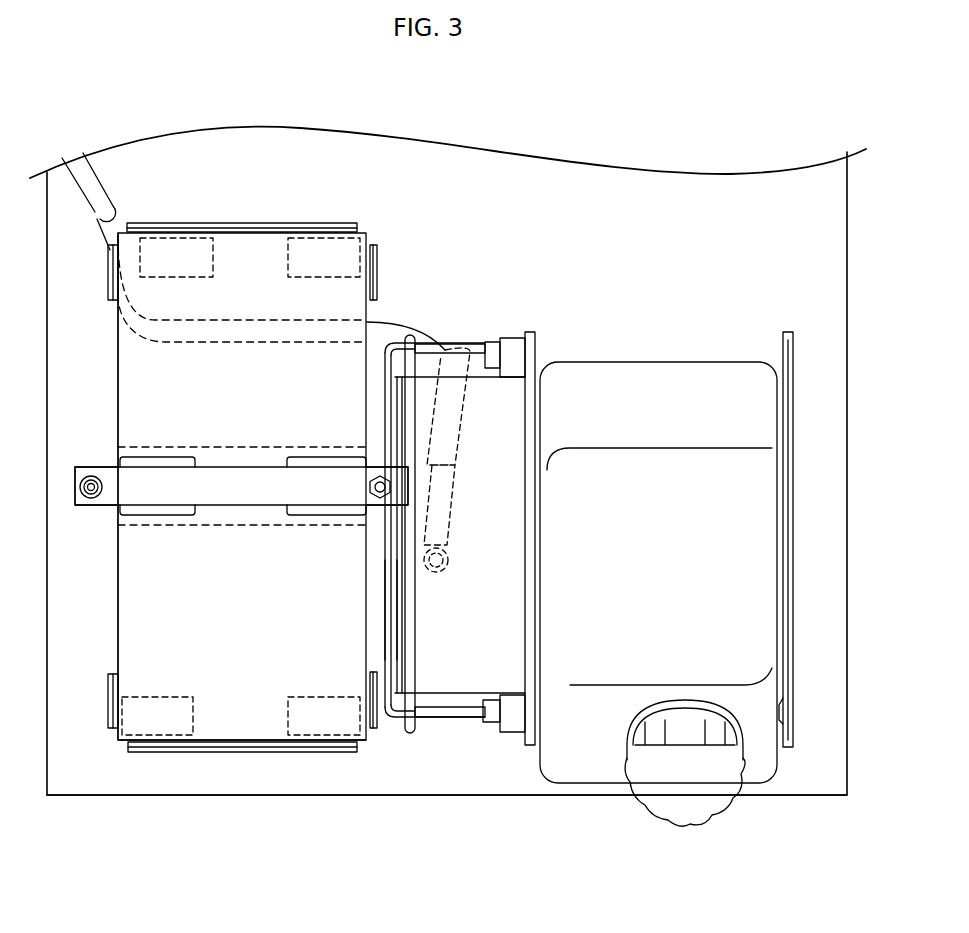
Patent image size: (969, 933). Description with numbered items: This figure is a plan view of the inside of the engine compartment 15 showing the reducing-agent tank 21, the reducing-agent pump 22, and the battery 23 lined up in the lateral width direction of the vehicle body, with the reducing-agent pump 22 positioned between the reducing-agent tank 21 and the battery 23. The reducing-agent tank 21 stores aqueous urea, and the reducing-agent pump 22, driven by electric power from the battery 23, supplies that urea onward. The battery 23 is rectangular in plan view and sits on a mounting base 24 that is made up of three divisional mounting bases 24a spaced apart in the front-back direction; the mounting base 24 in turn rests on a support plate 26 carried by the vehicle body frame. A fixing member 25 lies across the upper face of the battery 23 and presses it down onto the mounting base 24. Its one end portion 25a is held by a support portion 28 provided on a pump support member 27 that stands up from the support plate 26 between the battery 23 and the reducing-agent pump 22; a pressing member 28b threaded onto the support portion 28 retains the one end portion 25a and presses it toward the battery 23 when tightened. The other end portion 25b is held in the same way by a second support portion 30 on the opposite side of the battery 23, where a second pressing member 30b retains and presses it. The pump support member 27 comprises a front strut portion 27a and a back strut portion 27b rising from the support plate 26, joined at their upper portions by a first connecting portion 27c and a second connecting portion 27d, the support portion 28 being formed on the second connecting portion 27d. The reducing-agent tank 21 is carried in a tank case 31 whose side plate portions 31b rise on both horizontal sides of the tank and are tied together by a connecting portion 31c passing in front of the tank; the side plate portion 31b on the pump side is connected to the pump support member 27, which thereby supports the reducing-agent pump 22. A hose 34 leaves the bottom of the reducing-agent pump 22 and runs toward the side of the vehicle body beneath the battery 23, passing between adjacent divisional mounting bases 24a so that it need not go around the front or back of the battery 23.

The engine compartment 15 is at (193, 153).
The reducing-agent tank 21 is at (668, 351).
The reducing-agent pump 22 is at (462, 707).
The battery 23 is at (108, 616).
The mounting base 24 is at (255, 221).
The divisional mounting bases 24a is at (290, 252).
The fixing member 25 is at (229, 516).
The one end portion 25a is at (385, 500).
The other end portion 25b is at (92, 505).
The support plate 26 is at (127, 780).
The pump support member 27 is at (392, 716).
The front strut portion 27a is at (476, 720).
The back strut portion 27b is at (478, 345).
The first connecting portion 27c is at (385, 600).
The second connecting portion 27d is at (413, 625).
The support portion 28 is at (380, 352).
The pressing member 28b is at (376, 452).
The second support portion 30 is at (89, 444).
The second pressing member 30b is at (103, 487).
The tank case 31 is at (803, 538).
The side plate portions 31b is at (792, 420).
The connecting portion 31c is at (790, 725).
The hose 34 is at (425, 320).